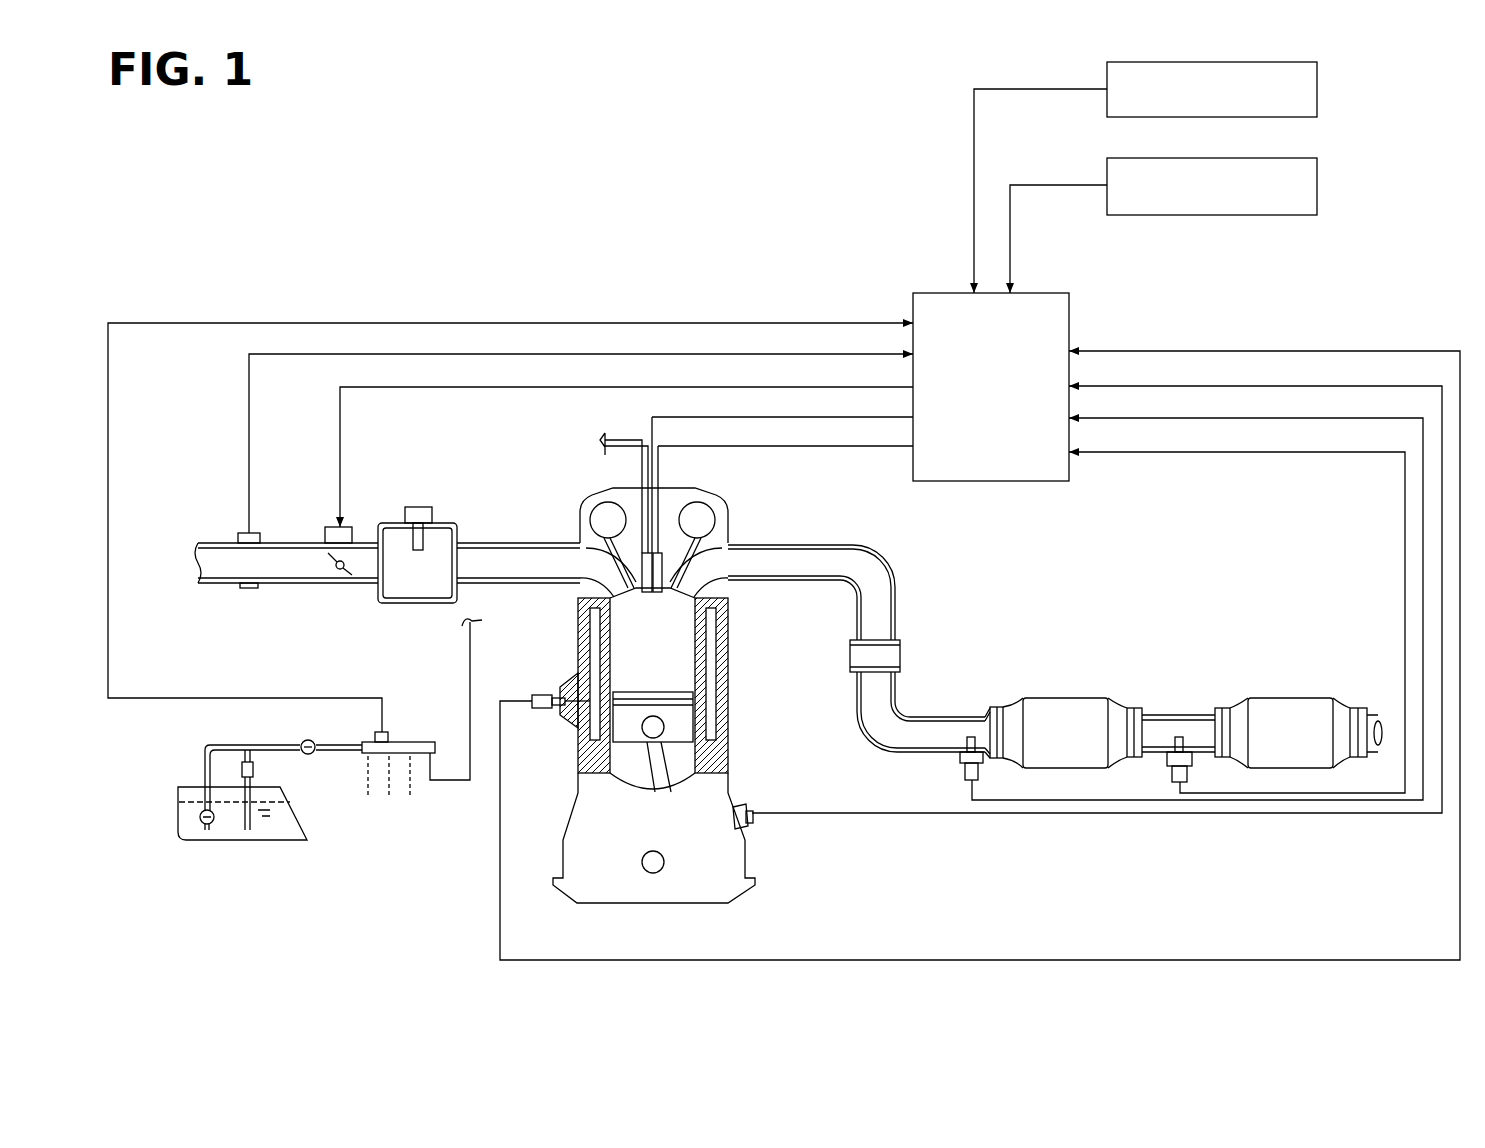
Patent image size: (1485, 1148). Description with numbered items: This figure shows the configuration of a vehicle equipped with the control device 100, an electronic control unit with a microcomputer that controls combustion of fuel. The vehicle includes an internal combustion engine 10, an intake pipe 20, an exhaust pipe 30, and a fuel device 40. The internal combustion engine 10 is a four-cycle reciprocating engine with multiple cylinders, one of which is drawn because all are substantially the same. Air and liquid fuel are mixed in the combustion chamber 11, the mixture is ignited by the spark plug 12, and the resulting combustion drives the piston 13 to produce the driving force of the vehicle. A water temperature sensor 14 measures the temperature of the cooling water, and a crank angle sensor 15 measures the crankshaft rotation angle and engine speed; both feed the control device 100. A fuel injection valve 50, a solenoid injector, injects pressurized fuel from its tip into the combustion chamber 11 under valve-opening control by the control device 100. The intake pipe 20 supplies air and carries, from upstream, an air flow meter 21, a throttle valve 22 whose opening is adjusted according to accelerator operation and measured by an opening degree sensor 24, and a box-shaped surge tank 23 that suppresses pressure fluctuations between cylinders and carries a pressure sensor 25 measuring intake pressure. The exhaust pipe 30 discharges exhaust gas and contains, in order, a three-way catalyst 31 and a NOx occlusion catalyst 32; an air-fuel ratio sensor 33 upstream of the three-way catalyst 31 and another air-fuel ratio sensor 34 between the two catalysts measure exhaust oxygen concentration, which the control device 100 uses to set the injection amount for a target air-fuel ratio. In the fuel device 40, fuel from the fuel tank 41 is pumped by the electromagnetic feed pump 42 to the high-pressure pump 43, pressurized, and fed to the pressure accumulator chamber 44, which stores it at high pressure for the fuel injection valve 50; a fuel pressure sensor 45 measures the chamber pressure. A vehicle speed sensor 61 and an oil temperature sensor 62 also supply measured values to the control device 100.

The internal combustion engine 10 is at (800, 498).
The combustion chamber 11 is at (677, 637).
The spark plug 12 is at (686, 546).
The piston 13 is at (690, 712).
The water temperature sensor 14 is at (545, 712).
The crank angle sensor 15 is at (755, 810).
The intake pipe 20 is at (480, 543).
The air flow meter 21 is at (238, 534).
The throttle valve 22 is at (330, 556).
The surge tank 23 is at (400, 522).
The opening degree sensor 24 is at (320, 526).
The pressure sensor 25 is at (424, 506).
The exhaust pipe 30 is at (838, 545).
The three-way catalyst 31 is at (1068, 697).
The NOx occlusion catalyst 32 is at (1293, 697).
The air-fuel ratio sensor 33 is at (958, 778).
The air-fuel ratio sensor 34 is at (1168, 775).
The fuel device 40 is at (325, 848).
The fuel tank 41 is at (277, 842).
The feed pump 42 is at (200, 826).
The high-pressure pump 43 is at (312, 756).
The pressure accumulator chamber 44 is at (420, 741).
The fuel pressure sensor 45 is at (390, 730).
The fuel injection valve 50 is at (624, 540).
The vehicle speed sensor 61 is at (1320, 85).
The oil temperature sensor 62 is at (1320, 185).
The control device 100 is at (932, 290).